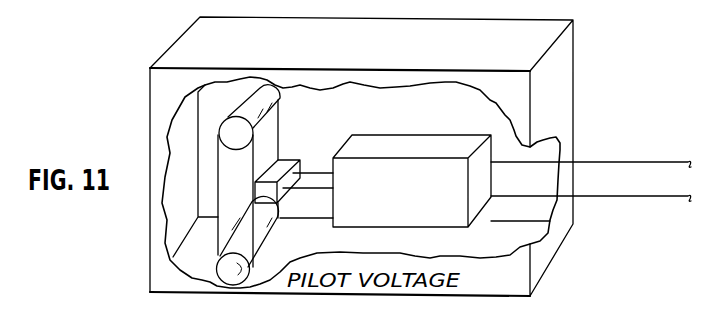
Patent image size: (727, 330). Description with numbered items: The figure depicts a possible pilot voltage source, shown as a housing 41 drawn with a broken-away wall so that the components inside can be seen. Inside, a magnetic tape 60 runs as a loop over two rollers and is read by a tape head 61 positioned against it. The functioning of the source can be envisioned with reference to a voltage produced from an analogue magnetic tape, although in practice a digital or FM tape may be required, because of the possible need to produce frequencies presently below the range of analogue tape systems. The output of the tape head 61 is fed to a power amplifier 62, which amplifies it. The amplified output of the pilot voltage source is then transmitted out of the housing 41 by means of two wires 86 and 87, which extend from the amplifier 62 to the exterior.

The housing 41 is at (563, 67).
The magnetic tape 60 is at (217, 202).
The tape head 61 is at (287, 157).
The power amplifier 62 is at (413, 143).
The wire 86 is at (620, 198).
The wire 87 is at (623, 165).